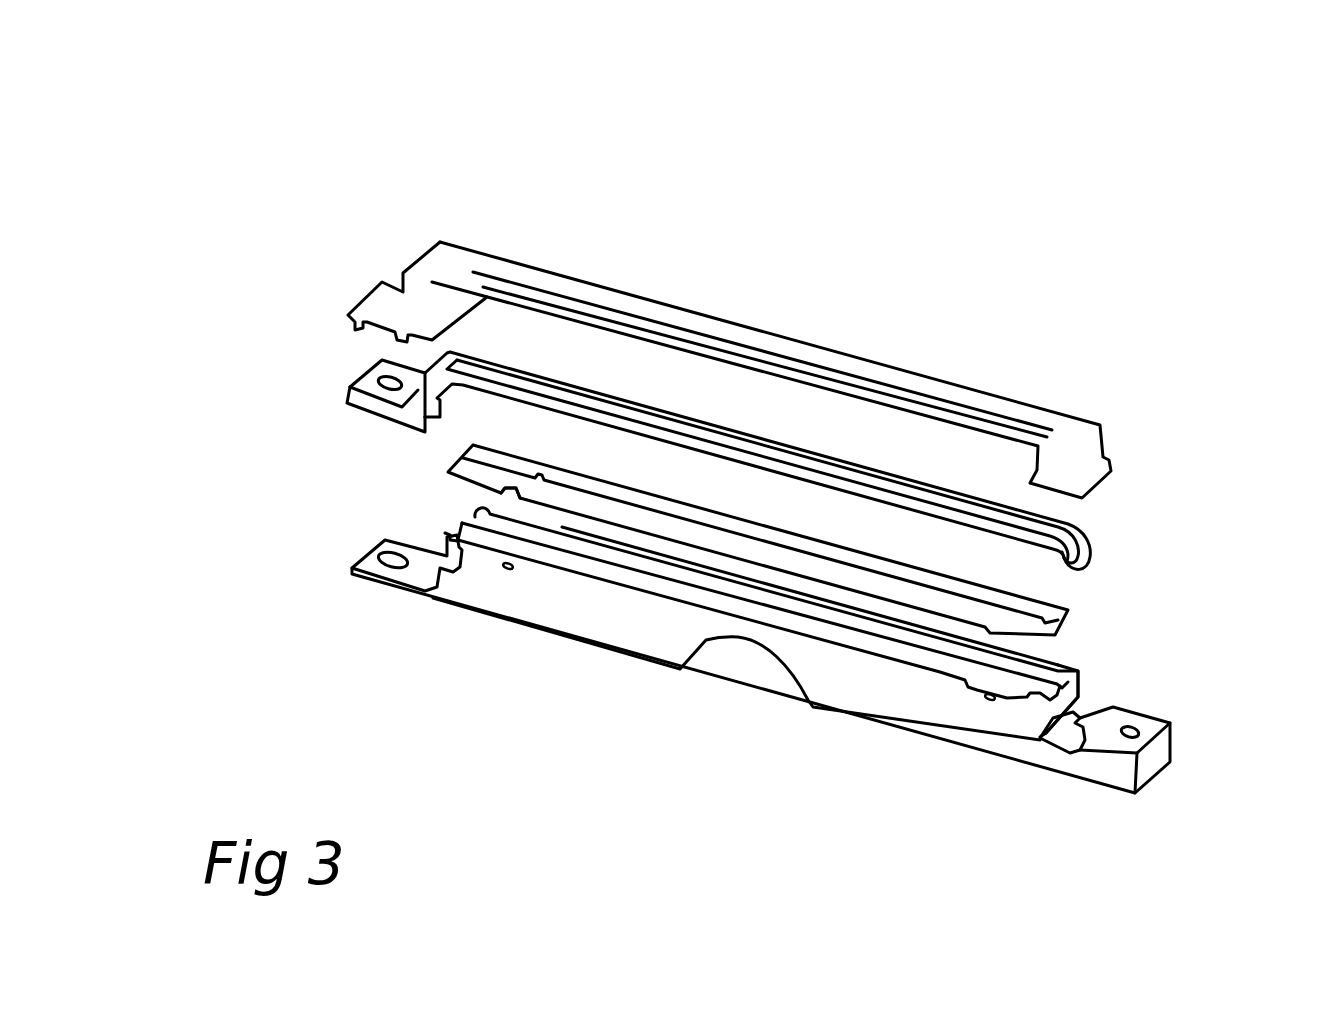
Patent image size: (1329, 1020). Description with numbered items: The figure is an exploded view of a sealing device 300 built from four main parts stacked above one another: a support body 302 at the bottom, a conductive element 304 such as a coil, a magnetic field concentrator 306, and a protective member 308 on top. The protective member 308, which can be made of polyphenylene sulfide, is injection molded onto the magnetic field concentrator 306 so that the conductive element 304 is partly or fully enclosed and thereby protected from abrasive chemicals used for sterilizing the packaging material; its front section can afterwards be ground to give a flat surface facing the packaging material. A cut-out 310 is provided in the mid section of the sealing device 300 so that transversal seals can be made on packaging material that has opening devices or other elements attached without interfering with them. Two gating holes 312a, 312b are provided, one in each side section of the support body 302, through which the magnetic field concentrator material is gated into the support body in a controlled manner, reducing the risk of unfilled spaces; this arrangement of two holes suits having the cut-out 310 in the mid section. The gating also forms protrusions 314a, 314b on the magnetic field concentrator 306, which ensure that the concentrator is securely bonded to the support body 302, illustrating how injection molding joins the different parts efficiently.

The sealing device 300 is at (362, 172).
The support body 302 is at (543, 608).
The conductive element 304 is at (1090, 547).
The magnetic field concentrator 306 is at (1050, 603).
The protective member 308 is at (1080, 462).
The cut-out 310 is at (748, 700).
The gating hole 312a is at (507, 567).
The gating hole 312b is at (990, 698).
The protrusion 314a is at (500, 494).
The protrusion 314b is at (1055, 658).